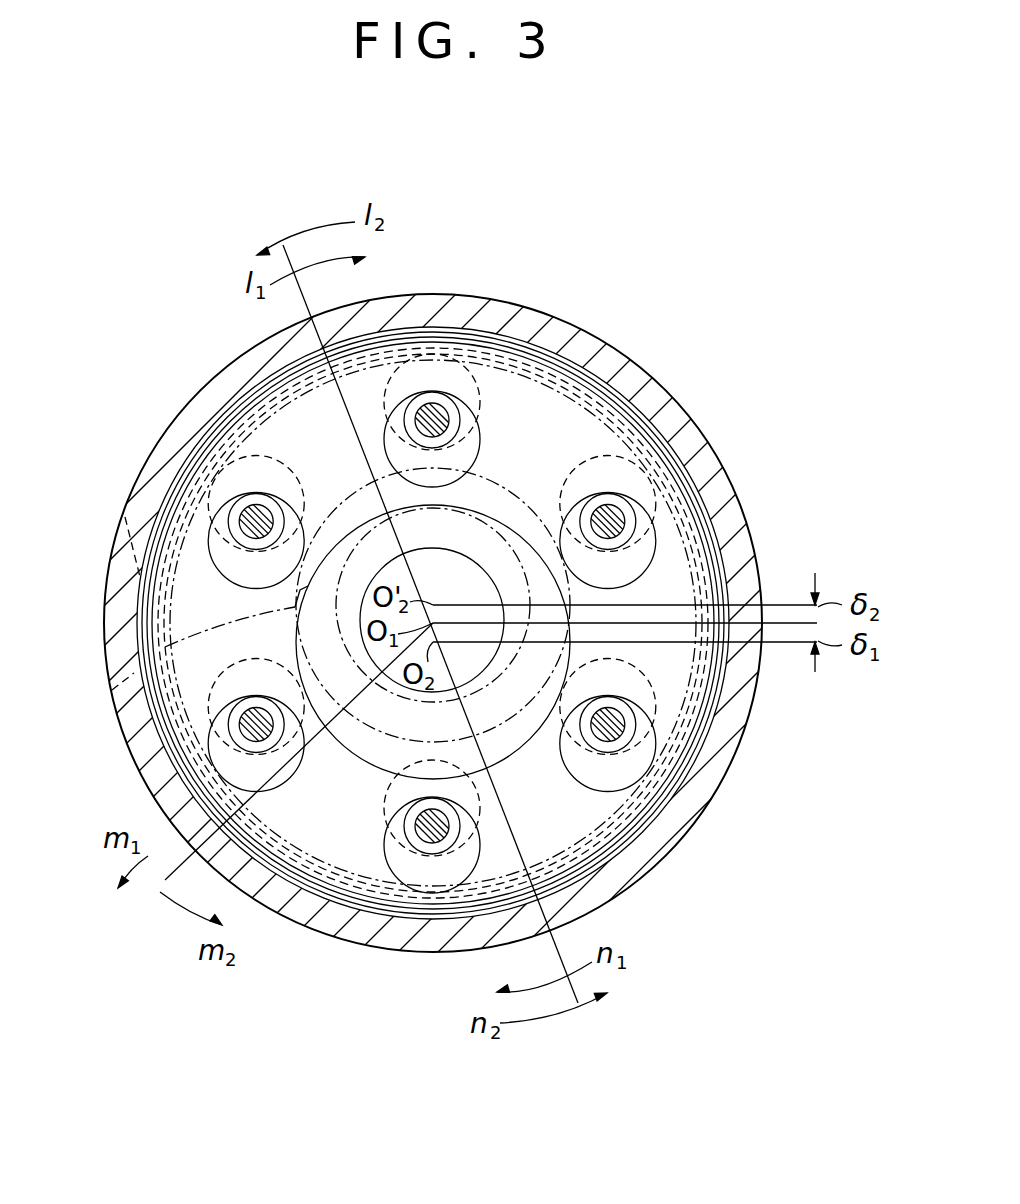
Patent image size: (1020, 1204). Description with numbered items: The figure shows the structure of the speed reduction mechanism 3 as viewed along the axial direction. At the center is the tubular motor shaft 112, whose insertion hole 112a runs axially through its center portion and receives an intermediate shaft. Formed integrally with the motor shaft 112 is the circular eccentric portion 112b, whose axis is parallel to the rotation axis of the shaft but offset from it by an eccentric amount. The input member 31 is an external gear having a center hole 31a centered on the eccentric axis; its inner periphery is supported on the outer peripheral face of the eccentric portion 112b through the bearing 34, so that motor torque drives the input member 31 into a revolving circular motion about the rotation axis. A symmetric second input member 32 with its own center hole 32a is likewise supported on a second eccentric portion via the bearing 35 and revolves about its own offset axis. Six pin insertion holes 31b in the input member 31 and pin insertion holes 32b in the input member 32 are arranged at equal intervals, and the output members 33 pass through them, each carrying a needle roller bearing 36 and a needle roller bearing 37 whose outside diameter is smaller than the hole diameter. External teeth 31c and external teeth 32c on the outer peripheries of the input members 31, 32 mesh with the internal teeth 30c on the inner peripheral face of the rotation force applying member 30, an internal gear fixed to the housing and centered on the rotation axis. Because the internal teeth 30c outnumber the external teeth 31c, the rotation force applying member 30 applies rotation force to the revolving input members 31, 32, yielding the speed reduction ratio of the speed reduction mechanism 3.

The speed reduction mechanism 3 is at (793, 427).
The rotation force applying member 30 is at (605, 328).
The internal teeth 30c is at (133, 623).
The input member 31 is at (272, 390).
The center hole 31a is at (303, 700).
The pin insertion holes 31b is at (422, 392).
The external teeth 31c is at (648, 422).
The input member 32 is at (258, 383).
The center hole 32a is at (152, 660).
The pin insertion holes 32b is at (735, 698).
The external teeth 32c is at (157, 560).
The output members 33 is at (447, 412).
The bearing 34 is at (378, 760).
The bearing 35 is at (452, 530).
The needle roller bearing 36 is at (436, 392).
The needle roller bearing 37 is at (627, 753).
The motor shaft 112 is at (223, 410).
The insertion hole 112a is at (575, 850).
The eccentric portion 112b is at (642, 377).